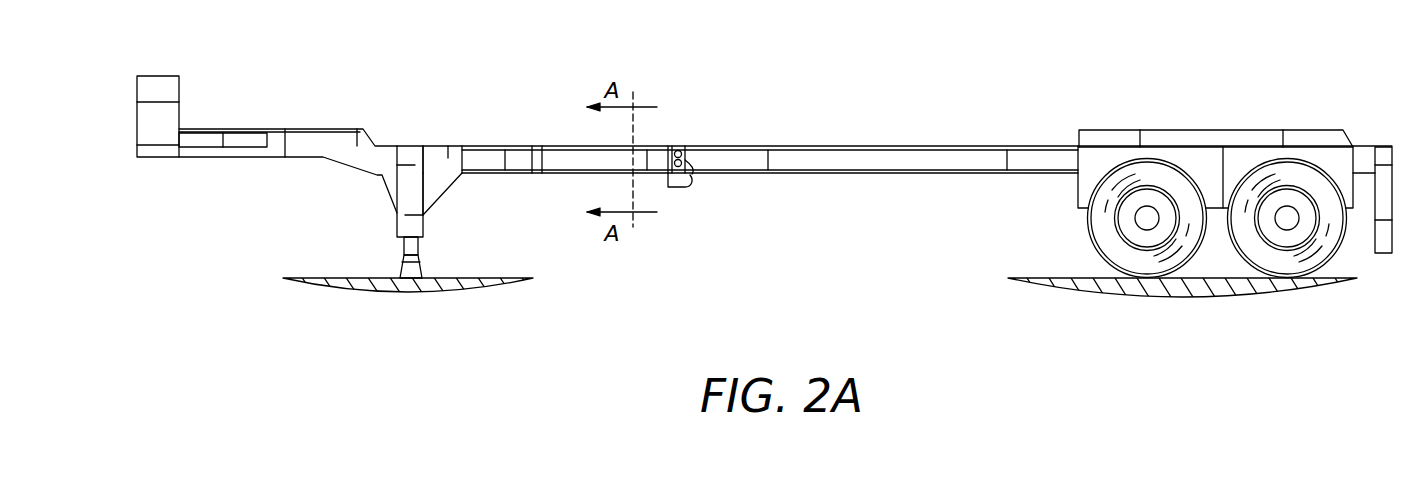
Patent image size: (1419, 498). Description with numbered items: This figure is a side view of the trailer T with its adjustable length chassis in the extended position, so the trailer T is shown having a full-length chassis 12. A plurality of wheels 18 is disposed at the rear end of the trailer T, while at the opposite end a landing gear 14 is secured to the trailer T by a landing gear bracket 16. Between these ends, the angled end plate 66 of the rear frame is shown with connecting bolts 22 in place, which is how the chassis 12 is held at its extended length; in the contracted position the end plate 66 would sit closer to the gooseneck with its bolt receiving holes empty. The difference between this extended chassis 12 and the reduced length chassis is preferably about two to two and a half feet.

The full-length chassis 12 is at (966, 146).
The landing gear 14 is at (397, 241).
The landing gear bracket 16 is at (425, 157).
The wheels 18 is at (1088, 238).
The connecting bolts 22 is at (688, 181).
The angled end plate 66 is at (683, 147).
The trailer T is at (1370, 146).